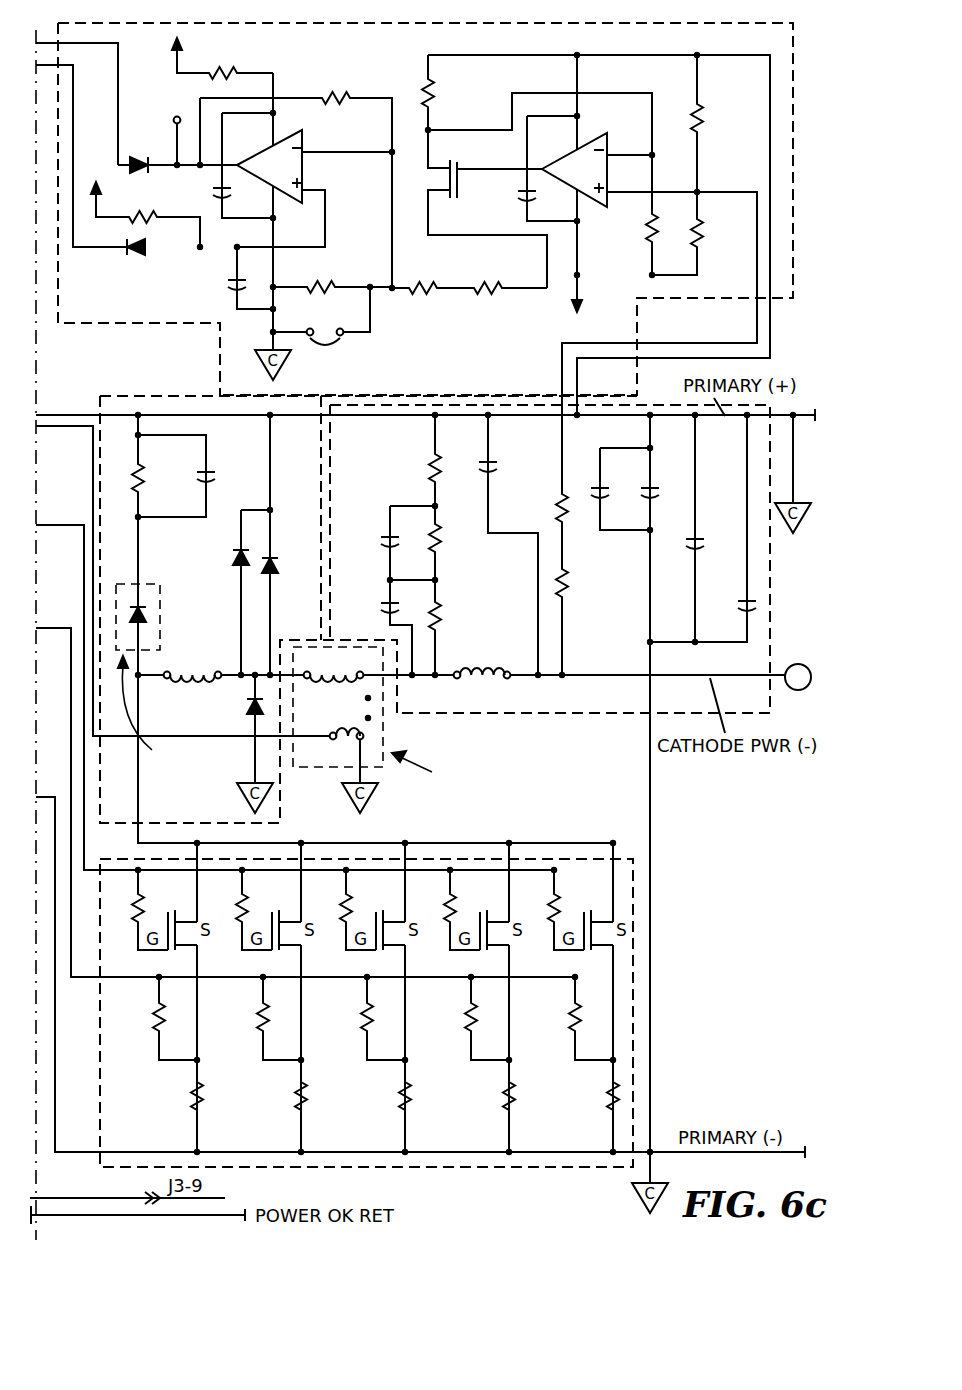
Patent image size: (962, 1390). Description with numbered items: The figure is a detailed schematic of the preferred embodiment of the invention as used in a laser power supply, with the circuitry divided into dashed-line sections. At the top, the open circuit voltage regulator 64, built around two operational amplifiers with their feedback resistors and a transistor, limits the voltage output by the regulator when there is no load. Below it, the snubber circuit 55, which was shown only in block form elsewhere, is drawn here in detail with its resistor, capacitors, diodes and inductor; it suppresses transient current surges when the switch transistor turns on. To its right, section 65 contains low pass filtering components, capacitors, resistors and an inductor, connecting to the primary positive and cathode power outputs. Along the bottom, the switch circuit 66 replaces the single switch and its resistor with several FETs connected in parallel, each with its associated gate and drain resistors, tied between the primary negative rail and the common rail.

The open circuit voltage regulator 64 is at (107, 323).
The snubber circuit 55 is at (368, 598).
The output filter section 65 is at (607, 716).
The switch circuit 66 is at (546, 1169).